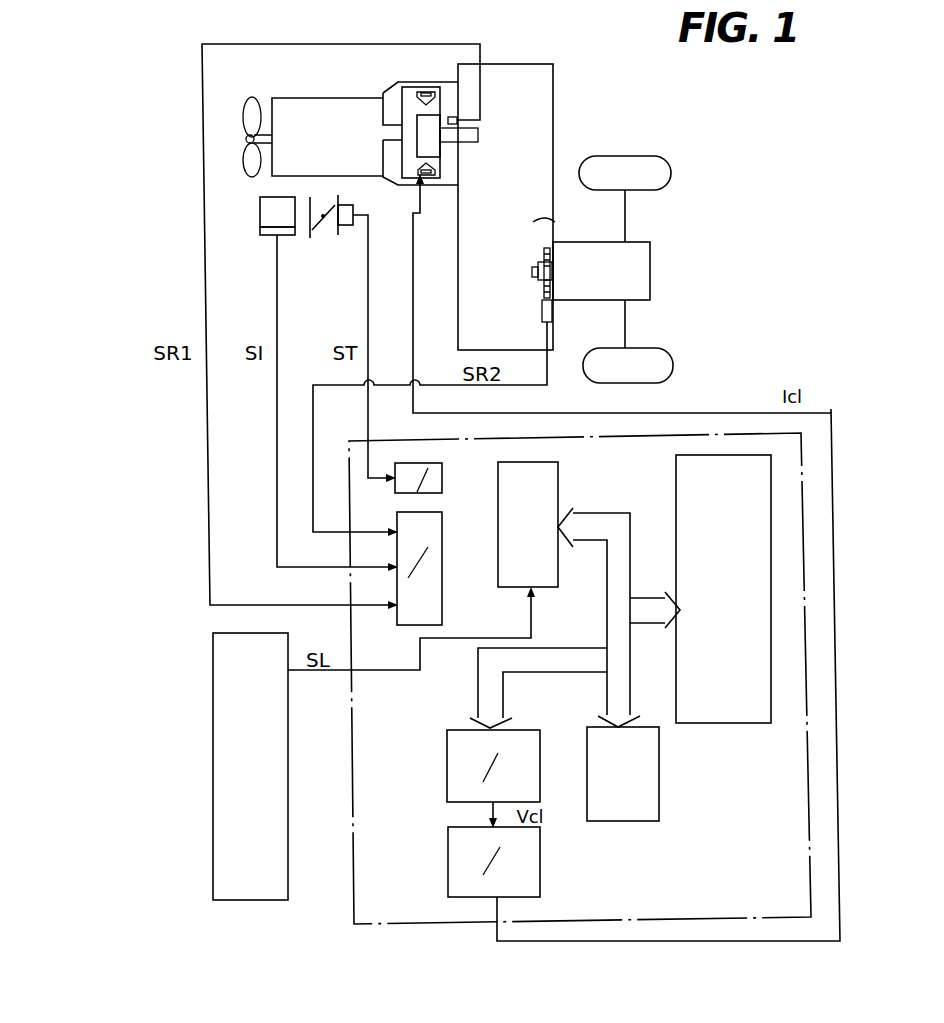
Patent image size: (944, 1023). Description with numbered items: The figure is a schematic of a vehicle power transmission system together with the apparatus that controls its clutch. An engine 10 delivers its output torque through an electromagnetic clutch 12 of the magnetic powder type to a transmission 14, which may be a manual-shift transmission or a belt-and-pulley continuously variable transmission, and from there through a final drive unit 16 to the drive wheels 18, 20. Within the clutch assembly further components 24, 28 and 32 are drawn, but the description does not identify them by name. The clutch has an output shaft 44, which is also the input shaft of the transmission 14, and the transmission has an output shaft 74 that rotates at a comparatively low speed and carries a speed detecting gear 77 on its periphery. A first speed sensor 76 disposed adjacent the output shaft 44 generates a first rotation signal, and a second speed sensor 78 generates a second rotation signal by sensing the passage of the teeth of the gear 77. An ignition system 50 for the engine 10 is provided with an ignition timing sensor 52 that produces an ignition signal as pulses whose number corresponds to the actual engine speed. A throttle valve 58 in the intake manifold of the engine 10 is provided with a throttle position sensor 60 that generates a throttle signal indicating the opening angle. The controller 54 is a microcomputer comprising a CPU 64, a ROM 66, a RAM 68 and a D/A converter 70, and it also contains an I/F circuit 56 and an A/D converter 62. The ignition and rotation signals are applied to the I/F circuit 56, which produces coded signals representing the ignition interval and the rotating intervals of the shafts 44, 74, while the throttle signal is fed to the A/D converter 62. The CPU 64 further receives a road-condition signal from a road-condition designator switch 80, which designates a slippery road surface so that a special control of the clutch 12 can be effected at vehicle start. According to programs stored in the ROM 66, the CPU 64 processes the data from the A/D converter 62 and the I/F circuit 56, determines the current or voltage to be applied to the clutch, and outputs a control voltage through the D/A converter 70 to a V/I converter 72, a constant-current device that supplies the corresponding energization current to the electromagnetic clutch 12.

The engine 10 is at (283, 104).
The electromagnetic clutch 12 is at (409, 72).
The transmission 14 is at (541, 64).
The final drive unit 16 is at (645, 272).
The drive wheel 18 is at (628, 162).
The drive wheel 20 is at (645, 356).
The reduction gear housing 24 is at (405, 100).
The clutch 28 is at (430, 87).
The electromagnetic clutch 32 is at (436, 149).
The output shaft 44 is at (474, 136).
The ignition system 50 is at (260, 212).
The ignition timing sensor 52 is at (268, 237).
The controller 54 is at (420, 927).
The I/F circuit 56 is at (437, 612).
The throttle valve 58 is at (323, 232).
The throttle position sensor 60 is at (354, 214).
The A/D converter 62 is at (395, 487).
The central processing unit 64 is at (558, 476).
The read-only memory 66 is at (684, 505).
The random-access memory 68 is at (652, 756).
The D/A converter 70 is at (448, 746).
The V/I converter 72 is at (450, 860).
The output shaft 74 is at (533, 272).
The first speed sensor 76 is at (458, 112).
The speed detecting gear 77 is at (543, 297).
The second speed sensor 78 is at (540, 308).
The road-condition designator switch 80 is at (240, 893).